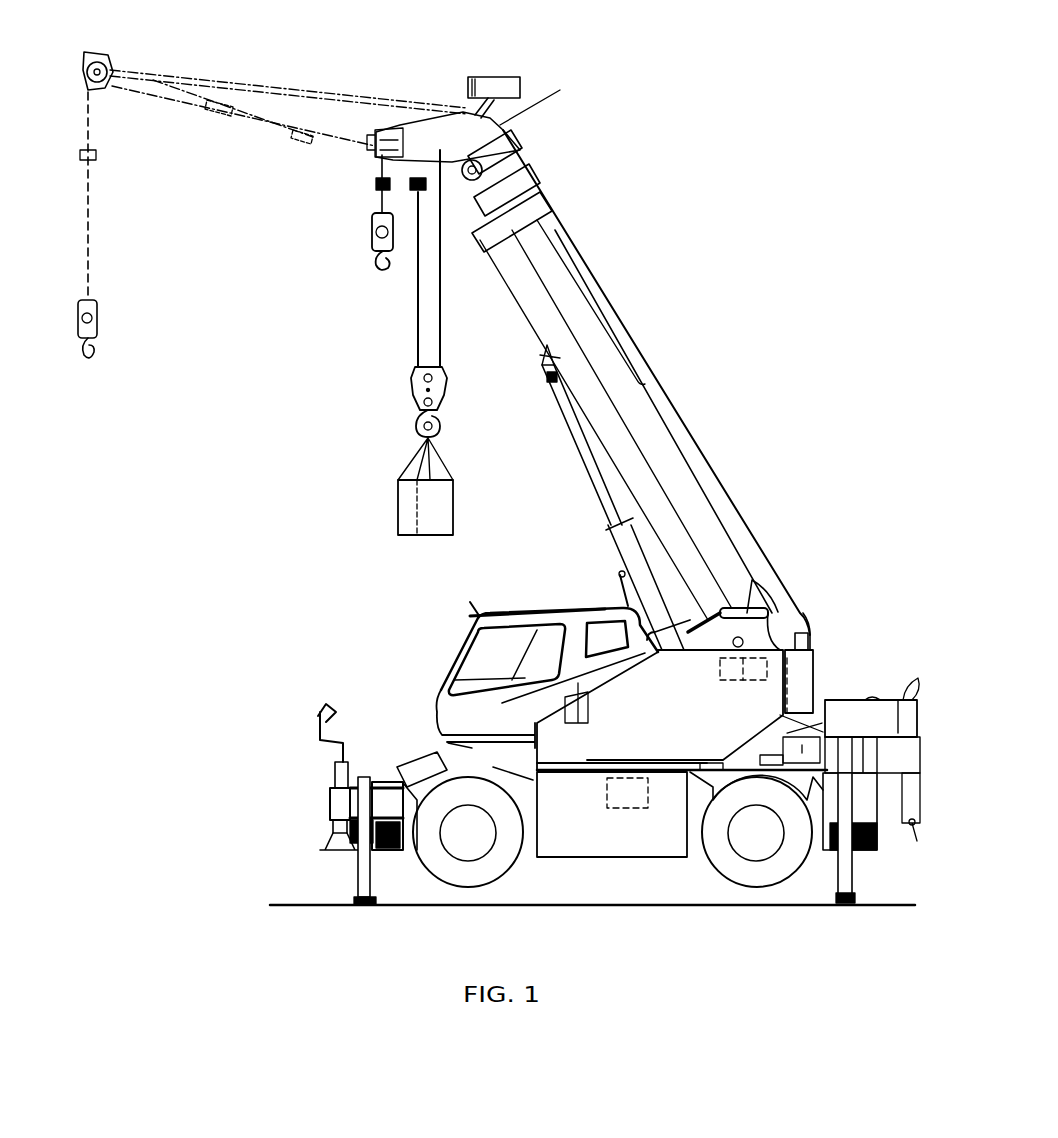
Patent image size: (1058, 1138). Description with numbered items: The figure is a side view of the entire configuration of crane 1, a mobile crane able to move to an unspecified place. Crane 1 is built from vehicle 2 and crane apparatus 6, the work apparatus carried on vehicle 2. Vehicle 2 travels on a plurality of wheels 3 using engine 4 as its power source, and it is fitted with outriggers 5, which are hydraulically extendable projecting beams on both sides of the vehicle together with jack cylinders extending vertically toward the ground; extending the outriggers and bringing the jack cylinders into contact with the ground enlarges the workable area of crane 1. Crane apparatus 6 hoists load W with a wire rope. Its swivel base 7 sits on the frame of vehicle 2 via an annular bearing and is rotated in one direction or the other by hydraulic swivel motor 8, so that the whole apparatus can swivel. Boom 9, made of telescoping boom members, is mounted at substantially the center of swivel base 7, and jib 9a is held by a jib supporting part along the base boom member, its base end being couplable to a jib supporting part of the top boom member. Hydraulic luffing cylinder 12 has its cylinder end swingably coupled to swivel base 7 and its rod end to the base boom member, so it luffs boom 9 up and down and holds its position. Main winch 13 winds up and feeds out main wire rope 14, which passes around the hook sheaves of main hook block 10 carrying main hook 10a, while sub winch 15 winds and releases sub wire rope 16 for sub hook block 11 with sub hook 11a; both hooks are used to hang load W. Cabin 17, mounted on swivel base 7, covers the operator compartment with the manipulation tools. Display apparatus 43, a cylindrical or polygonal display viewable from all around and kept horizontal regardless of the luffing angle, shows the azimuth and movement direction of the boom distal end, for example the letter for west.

The crane 1 is at (826, 30).
The vehicle 2 is at (272, 793).
The wheels 3 is at (463, 883).
The engine 4 is at (880, 700).
The outriggers 5 is at (358, 862).
The crane apparatus 6 is at (800, 272).
The swivel base 7 is at (560, 770).
The hydraulic swivel motor 8 is at (625, 808).
The boom 9 is at (634, 316).
The jib 9a is at (252, 118).
The main hook block 10 is at (441, 388).
The main hook 10a is at (442, 422).
The sub hook block 11 is at (372, 227).
The sub hook 11a is at (376, 262).
The hydraulic luffing cylinder 12 is at (598, 493).
The main winch 13 is at (813, 657).
The main wire rope 14 is at (441, 356).
The sub winch 15 is at (768, 605).
The sub wire rope 16 is at (377, 182).
The cabin 17 is at (460, 650).
The display apparatus 43 is at (520, 90).
The load W is at (453, 510).